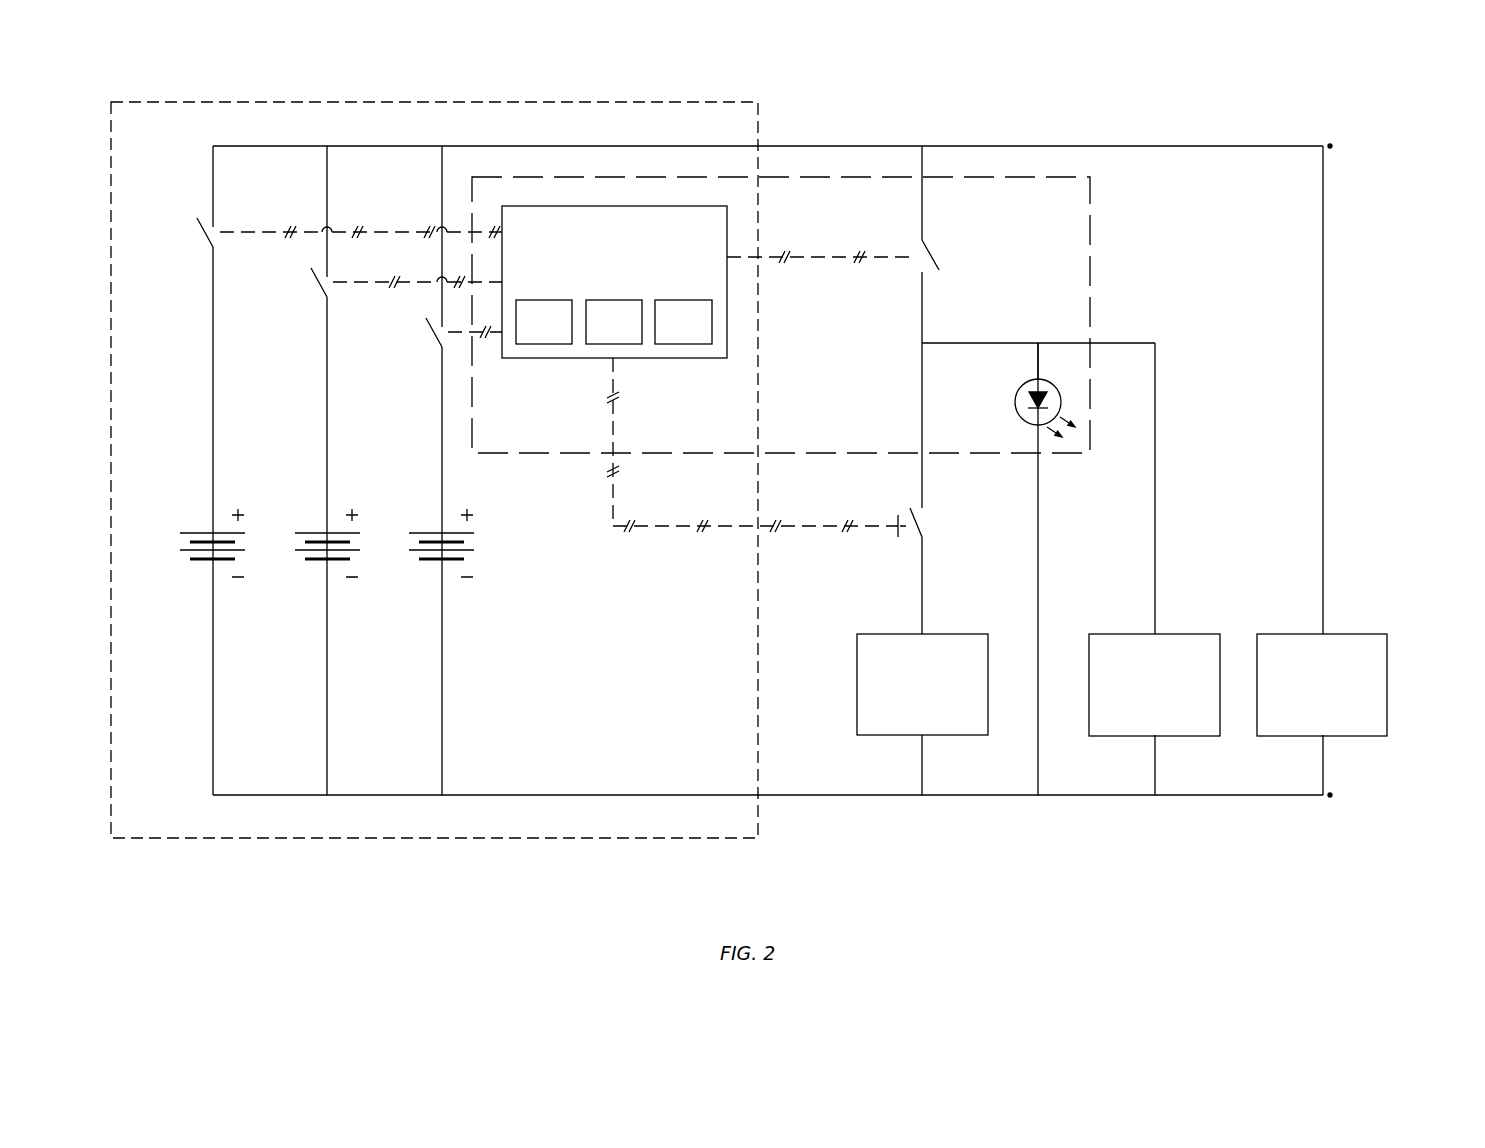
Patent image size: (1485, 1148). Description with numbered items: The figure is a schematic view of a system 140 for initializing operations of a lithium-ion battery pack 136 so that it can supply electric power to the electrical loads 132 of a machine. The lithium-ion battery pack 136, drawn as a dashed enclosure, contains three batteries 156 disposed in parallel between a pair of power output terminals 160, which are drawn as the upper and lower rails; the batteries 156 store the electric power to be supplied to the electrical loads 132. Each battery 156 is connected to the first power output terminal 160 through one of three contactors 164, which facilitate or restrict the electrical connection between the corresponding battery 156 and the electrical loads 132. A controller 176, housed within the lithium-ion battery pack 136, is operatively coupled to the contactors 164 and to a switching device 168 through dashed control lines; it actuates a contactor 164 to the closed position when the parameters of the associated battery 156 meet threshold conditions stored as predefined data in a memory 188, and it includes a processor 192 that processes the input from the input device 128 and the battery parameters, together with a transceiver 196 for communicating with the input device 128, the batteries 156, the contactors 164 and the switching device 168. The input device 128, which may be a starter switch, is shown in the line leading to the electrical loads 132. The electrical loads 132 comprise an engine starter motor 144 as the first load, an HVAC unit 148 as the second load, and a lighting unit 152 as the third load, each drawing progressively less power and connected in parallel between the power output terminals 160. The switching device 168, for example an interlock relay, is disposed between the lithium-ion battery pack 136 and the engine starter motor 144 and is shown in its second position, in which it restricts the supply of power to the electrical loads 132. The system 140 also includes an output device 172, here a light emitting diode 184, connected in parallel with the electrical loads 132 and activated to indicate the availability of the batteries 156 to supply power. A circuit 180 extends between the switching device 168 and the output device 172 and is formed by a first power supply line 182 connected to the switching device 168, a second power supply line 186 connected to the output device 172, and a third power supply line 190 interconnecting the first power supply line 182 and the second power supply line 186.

The lithium-ion battery pack 136 is at (702, 97).
The pair of power output terminals 160 is at (793, 137).
The batteries 156 is at (425, 566).
The contactors 164 is at (432, 336).
The controller 176 is at (632, 268).
The memory 188 is at (563, 335).
The processor 192 is at (633, 335).
The transceiver 196 is at (702, 335).
The first power supply line 182 is at (921, 318).
The switching device 168 is at (938, 245).
The input device 128 is at (901, 545).
The system 140 is at (1099, 222).
The third power supply line 190 is at (980, 342).
The circuit 180 is at (1015, 335).
The output device 172 is at (1001, 393).
The light emitting diode 184 is at (1013, 383).
The second power supply line 186 is at (1040, 345).
The electrical loads 132 is at (1160, 703).
The engine starter motor 144 is at (962, 738).
The HVAC unit 148 is at (1195, 634).
The lighting unit 152 is at (1363, 632).